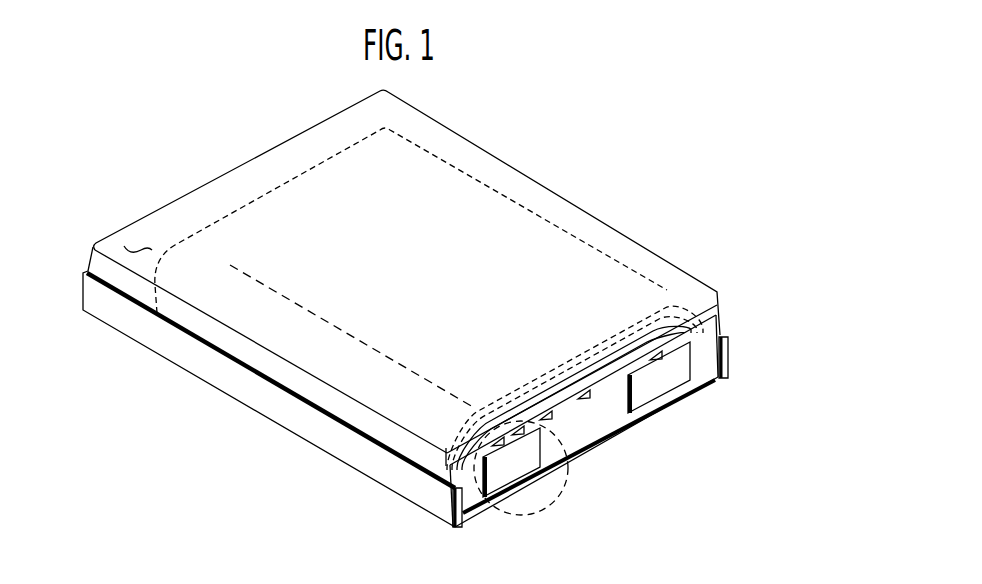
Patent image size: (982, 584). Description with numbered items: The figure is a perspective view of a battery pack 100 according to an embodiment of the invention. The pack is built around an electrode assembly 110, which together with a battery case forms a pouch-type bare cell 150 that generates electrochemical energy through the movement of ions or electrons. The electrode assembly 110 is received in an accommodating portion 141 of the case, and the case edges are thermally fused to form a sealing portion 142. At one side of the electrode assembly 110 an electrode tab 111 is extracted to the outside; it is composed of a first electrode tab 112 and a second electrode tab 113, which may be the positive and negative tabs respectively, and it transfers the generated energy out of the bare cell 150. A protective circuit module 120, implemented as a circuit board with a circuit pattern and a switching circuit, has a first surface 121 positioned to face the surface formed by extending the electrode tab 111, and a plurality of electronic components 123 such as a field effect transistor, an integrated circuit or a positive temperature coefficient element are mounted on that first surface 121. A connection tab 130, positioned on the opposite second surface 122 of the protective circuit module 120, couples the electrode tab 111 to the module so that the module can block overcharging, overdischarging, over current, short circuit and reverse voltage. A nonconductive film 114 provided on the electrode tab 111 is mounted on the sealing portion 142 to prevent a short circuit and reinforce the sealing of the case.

The battery pack 100 is at (103, 105).
The electrode assembly 110 is at (530, 230).
The electrode tab 111 is at (676, 486).
The first electrode tab 112 is at (543, 443).
The second electrode tab 113 is at (637, 413).
The film 114 is at (537, 477).
The protective circuit module 120 is at (724, 318).
The first surface 121 is at (693, 307).
The second surface 122 is at (703, 357).
The electronic components 123 is at (658, 313).
The connection tab 130 is at (460, 490).
The accommodating portion 141 is at (140, 243).
The sealing portion 142 is at (475, 520).
The bare cell 150 is at (103, 324).